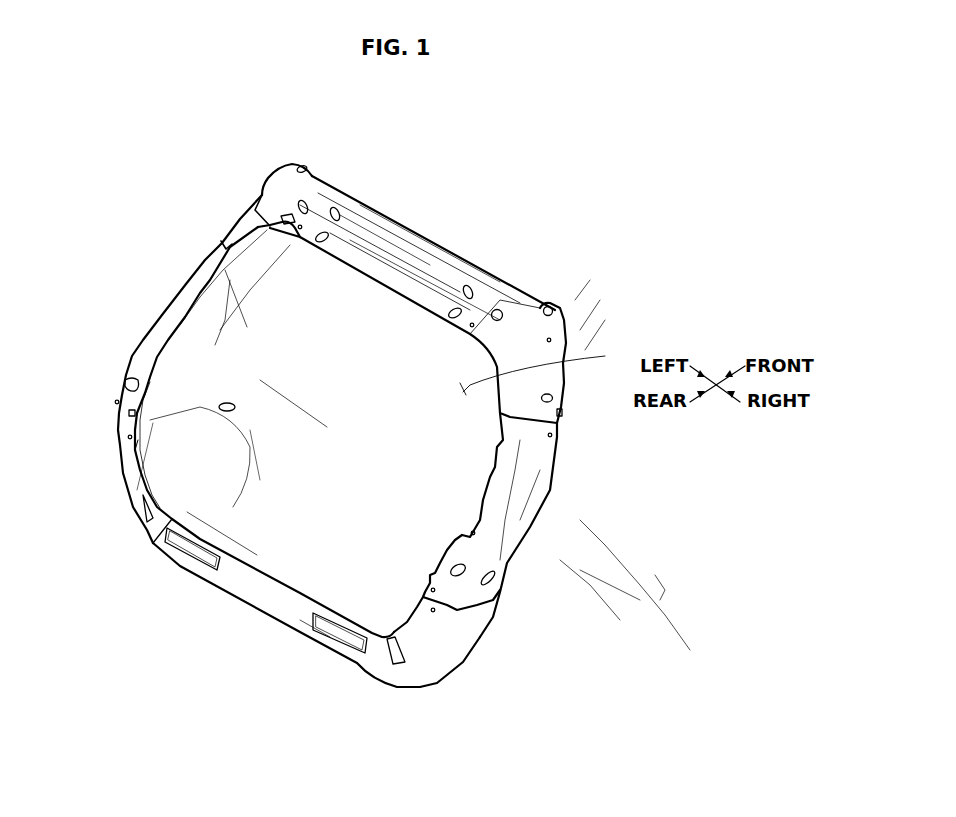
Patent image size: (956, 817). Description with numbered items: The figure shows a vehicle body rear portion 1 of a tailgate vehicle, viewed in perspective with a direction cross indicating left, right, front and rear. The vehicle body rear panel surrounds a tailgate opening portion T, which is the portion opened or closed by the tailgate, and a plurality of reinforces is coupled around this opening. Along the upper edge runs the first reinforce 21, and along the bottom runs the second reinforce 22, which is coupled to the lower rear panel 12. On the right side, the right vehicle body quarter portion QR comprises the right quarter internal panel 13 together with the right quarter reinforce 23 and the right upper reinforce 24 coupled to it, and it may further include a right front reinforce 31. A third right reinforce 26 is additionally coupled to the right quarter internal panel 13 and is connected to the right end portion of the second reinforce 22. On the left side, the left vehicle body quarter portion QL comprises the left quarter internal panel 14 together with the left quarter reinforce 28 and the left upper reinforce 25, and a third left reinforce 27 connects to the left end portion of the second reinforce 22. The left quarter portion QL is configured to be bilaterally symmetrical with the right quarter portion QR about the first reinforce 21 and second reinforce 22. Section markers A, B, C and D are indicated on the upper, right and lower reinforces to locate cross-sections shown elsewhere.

The vehicle body rear portion 1 is at (182, 240).
The lower rear panel 12 is at (337, 607).
The right quarter internal panel 13 is at (600, 303).
The left quarter internal panel 14 is at (275, 343).
The first reinforce 21 is at (413, 260).
The second reinforce 22 is at (268, 606).
The right quarter reinforce 23 is at (517, 500).
The right upper reinforce 24 is at (533, 318).
The left upper reinforce 25 is at (262, 205).
The third right reinforce 26 is at (440, 645).
The third left reinforce 27 is at (133, 483).
The left quarter reinforce 28 is at (175, 305).
The right front reinforce 31 is at (588, 525).
The left vehicle body quarter portion QL is at (127, 348).
The right vehicle body quarter portion QR is at (436, 538).
The section A is at (458, 286).
The section B is at (487, 555).
The section C is at (363, 658).
The section D is at (546, 376).
The tailgate opening portion T is at (541, 369).